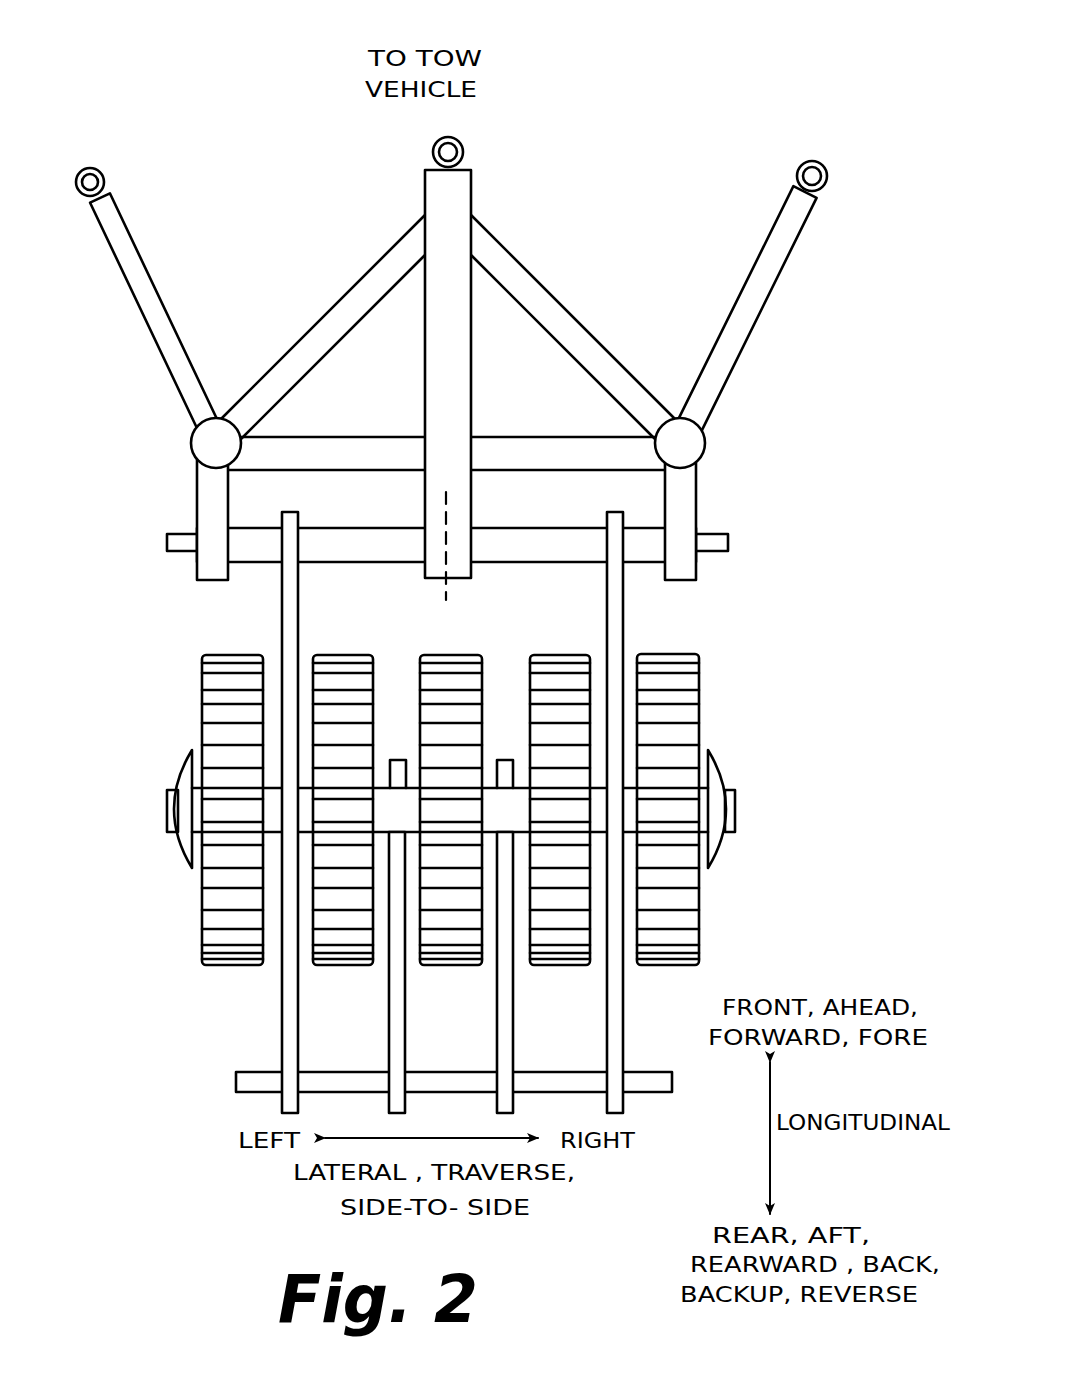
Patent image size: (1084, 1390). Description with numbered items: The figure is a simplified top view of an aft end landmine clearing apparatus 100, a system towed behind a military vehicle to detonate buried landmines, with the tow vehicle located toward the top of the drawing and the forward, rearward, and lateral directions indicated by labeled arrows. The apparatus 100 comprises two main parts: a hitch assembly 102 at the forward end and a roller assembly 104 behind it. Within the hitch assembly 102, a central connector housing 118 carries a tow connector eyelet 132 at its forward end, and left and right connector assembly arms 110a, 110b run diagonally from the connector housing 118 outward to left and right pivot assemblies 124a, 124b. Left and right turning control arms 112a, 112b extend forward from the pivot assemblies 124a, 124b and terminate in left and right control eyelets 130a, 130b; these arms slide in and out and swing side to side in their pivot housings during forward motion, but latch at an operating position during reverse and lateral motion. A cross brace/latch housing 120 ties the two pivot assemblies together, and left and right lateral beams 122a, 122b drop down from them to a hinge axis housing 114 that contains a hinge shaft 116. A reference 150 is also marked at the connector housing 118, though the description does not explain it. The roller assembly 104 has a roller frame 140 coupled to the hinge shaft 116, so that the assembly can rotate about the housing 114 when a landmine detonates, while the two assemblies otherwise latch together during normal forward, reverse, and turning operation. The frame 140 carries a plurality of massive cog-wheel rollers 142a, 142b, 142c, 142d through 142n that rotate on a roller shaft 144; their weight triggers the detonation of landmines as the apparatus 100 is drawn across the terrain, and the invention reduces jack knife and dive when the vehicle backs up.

The aft end landmine clearing apparatus 100 is at (650, 66).
The hitch assembly 102 is at (138, 366).
The roller assembly 104 is at (150, 726).
The left connector assembly arm 110a is at (285, 358).
The right connector assembly arm 110b is at (568, 318).
The left turning control arm 112a is at (143, 273).
The right turning control arm 112b is at (765, 297).
The hinge axis housing 114 is at (521, 528).
The hinge shaft 116 is at (164, 545).
The connector housing 118 is at (430, 357).
The cross brace/latch housing 120 is at (526, 436).
The left lateral beam 122a is at (205, 490).
The right lateral beam 122b is at (690, 496).
The left pivot assembly 124a is at (190, 443).
The right pivot assembly 124b is at (717, 432).
The left control eyelet 130a is at (94, 167).
The right control eyelet 130b is at (820, 160).
The tow connector eyelet 132 is at (466, 152).
The roller frame 140 is at (625, 608).
The cog-wheel roller 142a is at (232, 950).
The cog-wheel roller 142b is at (340, 950).
The cog-wheel roller 142c is at (453, 950).
The cog-wheel roller 142d is at (556, 950).
The cog-wheel roller 142n is at (680, 963).
The roller shaft 144 is at (732, 790).
The center line 150 is at (446, 497).